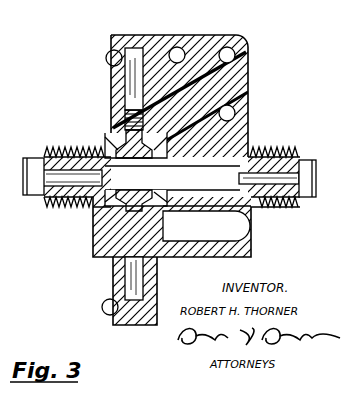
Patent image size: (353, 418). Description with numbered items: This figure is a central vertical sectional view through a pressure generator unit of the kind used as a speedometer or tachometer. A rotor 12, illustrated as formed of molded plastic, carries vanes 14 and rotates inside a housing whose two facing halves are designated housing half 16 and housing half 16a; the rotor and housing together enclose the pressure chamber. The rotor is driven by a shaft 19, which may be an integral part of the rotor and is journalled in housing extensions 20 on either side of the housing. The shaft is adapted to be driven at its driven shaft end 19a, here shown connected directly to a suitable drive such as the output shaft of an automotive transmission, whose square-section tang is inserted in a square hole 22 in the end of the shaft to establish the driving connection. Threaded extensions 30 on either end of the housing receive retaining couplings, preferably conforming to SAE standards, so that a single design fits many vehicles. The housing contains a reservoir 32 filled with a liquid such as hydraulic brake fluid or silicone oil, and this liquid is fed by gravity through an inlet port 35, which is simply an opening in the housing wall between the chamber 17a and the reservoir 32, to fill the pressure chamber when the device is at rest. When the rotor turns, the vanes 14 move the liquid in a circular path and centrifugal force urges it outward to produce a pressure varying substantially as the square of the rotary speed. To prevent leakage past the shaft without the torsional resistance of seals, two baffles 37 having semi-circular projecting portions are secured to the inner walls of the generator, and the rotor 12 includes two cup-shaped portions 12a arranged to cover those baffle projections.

The housing half 16 is at (198, 36).
The vanes 14 is at (130, 68).
The housing half 16a is at (112, 84).
The rotor 12 is at (125, 118).
The cup-shaped portions 12a is at (248, 62).
The baffles 37 is at (107, 147).
The shaft 19 is at (50, 207).
The driven shaft end 19a is at (250, 138).
The housing extensions 20 is at (50, 152).
The threaded extensions 30 is at (68, 208).
The square hole 22 is at (24, 197).
The chamber 17a is at (180, 245).
The reservoir 32 is at (218, 243).
The inlet port 35 is at (165, 243).